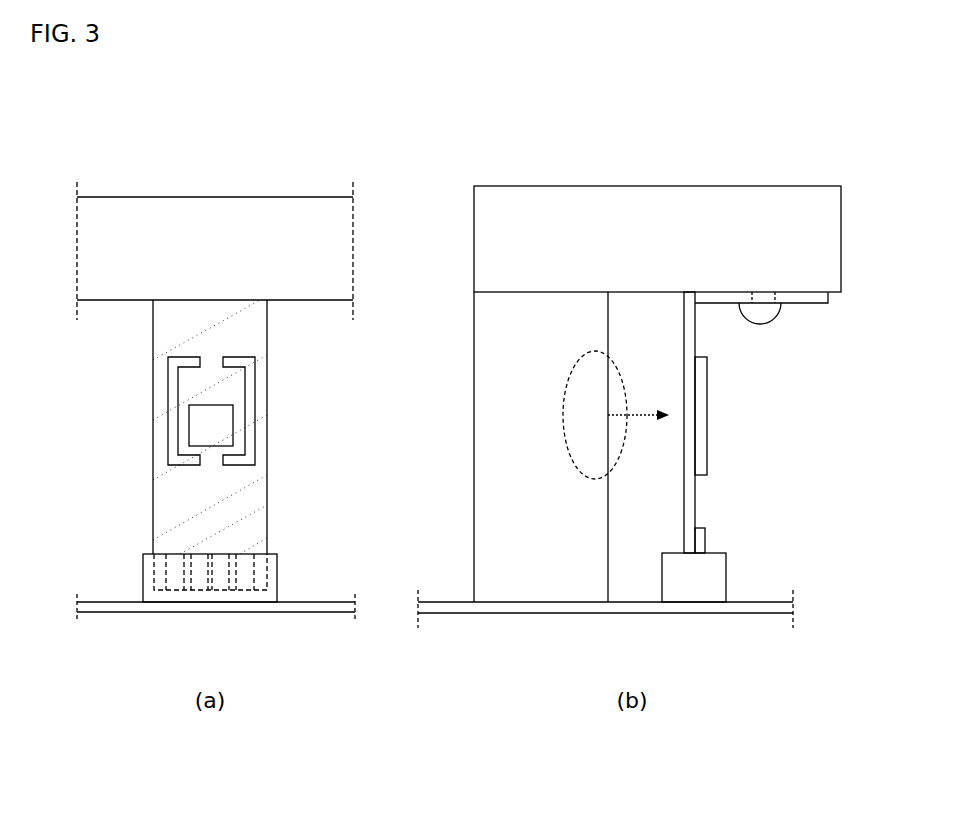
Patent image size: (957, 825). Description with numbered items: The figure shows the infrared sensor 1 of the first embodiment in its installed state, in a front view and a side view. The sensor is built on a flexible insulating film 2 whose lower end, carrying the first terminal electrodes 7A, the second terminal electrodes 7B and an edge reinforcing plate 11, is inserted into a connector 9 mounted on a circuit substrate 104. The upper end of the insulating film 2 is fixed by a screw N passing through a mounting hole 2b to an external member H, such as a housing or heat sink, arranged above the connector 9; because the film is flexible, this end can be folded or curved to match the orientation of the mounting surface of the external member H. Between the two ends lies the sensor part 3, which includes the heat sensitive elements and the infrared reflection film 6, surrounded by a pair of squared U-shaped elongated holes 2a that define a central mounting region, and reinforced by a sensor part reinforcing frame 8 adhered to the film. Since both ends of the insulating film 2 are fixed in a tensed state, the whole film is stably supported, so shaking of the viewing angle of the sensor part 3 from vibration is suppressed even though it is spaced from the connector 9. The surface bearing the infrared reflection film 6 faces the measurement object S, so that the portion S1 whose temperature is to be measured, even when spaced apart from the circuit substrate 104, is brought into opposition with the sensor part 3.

The external member H is at (233, 197).
The infrared sensor 1 is at (298, 365).
The insulating film 2 is at (267, 323).
The elongated holes 2a is at (172, 397).
The mounting hole 2b is at (768, 306).
The sensor part 3 is at (195, 390).
The infrared reflection film 6 is at (233, 421).
The first terminal electrodes 7A is at (175, 590).
The second terminal electrodes 7B is at (198, 590).
The sensor part reinforcing frame 8 is at (707, 414).
The connector 9 is at (277, 575).
The edge reinforcing plate 11 is at (705, 540).
The circuit substrate 104 is at (325, 612).
The portion of the measurement object S1 is at (565, 410).
The measurement object S is at (608, 563).
The screw N is at (757, 326).